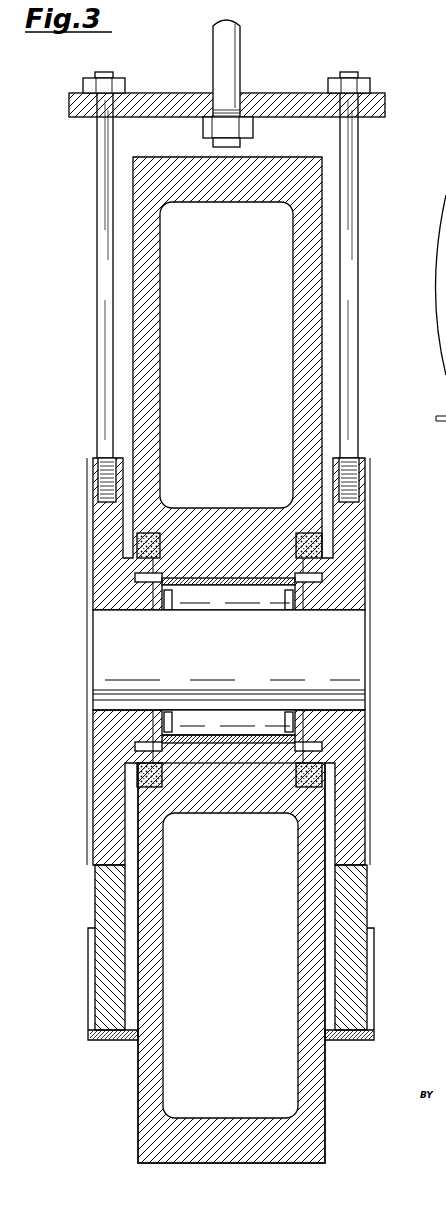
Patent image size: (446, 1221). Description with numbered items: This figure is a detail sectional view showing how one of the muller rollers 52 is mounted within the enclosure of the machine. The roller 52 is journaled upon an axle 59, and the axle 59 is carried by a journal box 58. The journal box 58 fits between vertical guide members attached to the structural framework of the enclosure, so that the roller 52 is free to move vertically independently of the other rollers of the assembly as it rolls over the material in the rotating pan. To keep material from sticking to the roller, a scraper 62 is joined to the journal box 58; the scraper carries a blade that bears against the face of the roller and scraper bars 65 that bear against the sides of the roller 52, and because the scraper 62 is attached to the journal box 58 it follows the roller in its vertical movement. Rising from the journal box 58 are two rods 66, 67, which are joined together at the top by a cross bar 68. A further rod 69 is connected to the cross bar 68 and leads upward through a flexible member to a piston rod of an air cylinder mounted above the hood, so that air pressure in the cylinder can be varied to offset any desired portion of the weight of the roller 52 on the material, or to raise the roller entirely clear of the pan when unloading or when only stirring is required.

The muller roller 52 is at (145, 1116).
The journal box 58 is at (372, 570).
The axle 59 is at (358, 641).
The scraper 62 is at (103, 896).
The scraper bar 65 is at (103, 1040).
The rod 66 is at (356, 150).
The rod 67 is at (97, 181).
The cross bar 68 is at (262, 93).
The rod 69 is at (240, 40).